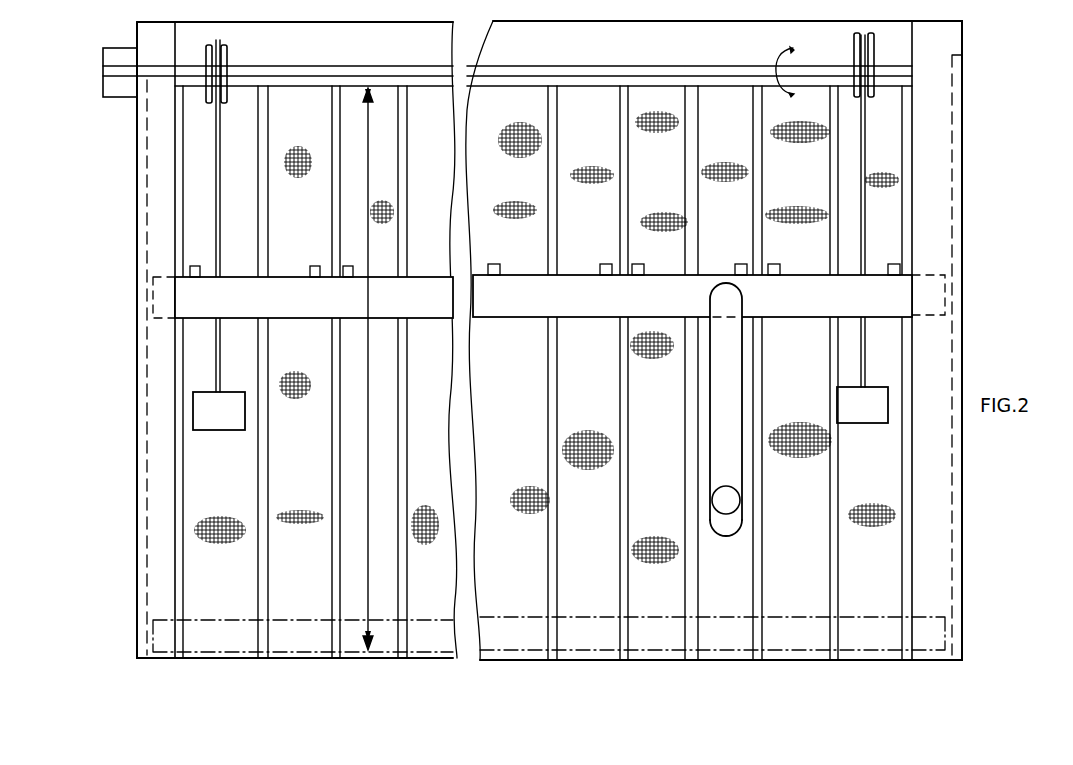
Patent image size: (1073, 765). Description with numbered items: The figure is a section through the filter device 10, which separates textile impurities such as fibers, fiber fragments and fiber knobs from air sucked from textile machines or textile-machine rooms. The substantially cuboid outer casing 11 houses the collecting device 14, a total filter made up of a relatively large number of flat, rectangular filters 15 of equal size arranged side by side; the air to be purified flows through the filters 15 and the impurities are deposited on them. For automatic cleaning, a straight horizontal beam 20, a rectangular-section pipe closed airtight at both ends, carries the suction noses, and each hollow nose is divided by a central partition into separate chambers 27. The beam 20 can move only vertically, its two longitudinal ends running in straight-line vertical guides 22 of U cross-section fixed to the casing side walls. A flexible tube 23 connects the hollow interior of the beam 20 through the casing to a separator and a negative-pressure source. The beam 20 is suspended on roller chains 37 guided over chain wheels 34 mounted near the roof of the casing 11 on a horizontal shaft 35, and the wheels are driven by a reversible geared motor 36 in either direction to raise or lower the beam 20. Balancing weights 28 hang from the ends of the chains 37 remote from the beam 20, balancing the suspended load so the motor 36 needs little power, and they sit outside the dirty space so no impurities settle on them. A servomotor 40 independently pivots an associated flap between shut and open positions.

The filter device 10 is at (126, 260).
The outer casing 11 is at (136, 543).
The collecting device 14 is at (588, 104).
The filters 15 is at (240, 595).
The beam 20 is at (585, 275).
The vertical guide 22 is at (928, 256).
The flexible tube 23 is at (725, 398).
The chamber 27 is at (170, 357).
The balancing weights 28 is at (232, 420).
The chain wheels 34 is at (228, 60).
The horizontal rail 35 is at (313, 70).
The motor 36 is at (104, 62).
The roller chains 37 is at (216, 130).
The servomotor 40 is at (345, 265).